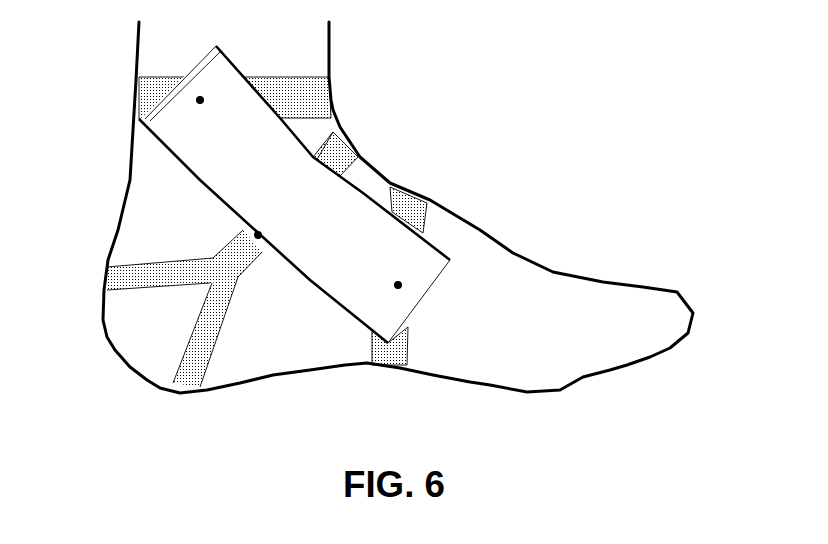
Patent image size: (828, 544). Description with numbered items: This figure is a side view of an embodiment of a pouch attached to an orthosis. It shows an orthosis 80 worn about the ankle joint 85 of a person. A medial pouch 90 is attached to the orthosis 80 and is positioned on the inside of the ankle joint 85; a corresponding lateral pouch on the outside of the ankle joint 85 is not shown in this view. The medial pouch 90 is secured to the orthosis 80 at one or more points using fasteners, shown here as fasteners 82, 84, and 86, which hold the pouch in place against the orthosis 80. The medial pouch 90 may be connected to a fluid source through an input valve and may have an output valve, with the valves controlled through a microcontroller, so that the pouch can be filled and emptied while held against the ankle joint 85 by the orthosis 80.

The orthosis 80 is at (322, 92).
The fastener 82 is at (192, 95).
The fastener 84 is at (262, 260).
The ankle joint 85 is at (218, 225).
The fastener 86 is at (398, 285).
The medial pouch 90 is at (347, 233).